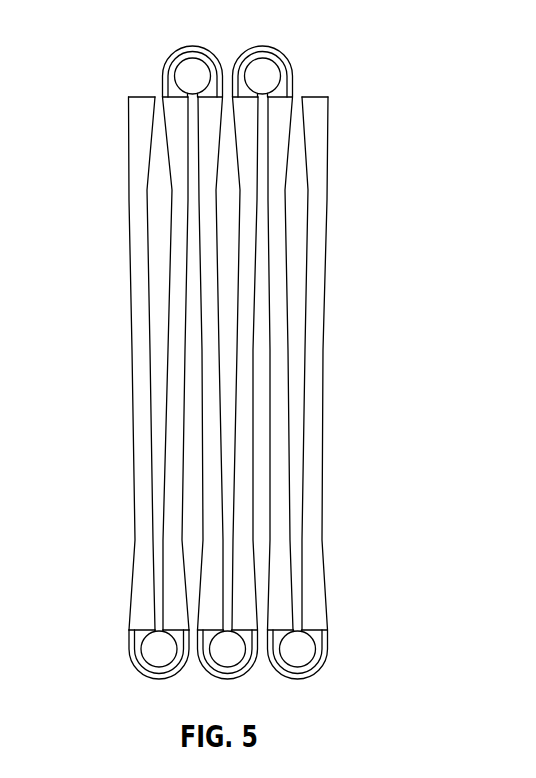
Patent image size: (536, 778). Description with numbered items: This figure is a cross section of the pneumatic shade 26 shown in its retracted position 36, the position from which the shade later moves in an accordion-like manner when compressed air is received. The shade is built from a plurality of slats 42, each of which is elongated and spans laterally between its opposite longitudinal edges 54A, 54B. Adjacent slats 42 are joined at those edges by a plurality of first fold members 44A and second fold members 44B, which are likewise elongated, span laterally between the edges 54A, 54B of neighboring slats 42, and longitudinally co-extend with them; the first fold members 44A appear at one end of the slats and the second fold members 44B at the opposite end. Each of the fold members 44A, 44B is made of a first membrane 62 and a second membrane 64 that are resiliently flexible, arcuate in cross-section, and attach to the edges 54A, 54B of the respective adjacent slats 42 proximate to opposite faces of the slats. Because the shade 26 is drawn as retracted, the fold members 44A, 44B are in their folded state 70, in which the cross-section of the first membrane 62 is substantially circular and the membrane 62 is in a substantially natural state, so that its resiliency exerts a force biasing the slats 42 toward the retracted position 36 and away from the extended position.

The pneumatic shade 26 is at (353, 42).
The retracted position 36 is at (373, 72).
The slats 42 is at (280, 352).
The first fold members 44A is at (247, 50).
The second fold members 44B is at (226, 681).
The longitudinal edge 54A is at (172, 118).
The longitudinal edge 54B is at (280, 118).
The first membrane 62 is at (305, 647).
The second membrane 64 is at (328, 657).
The folded state 70 is at (277, 32).